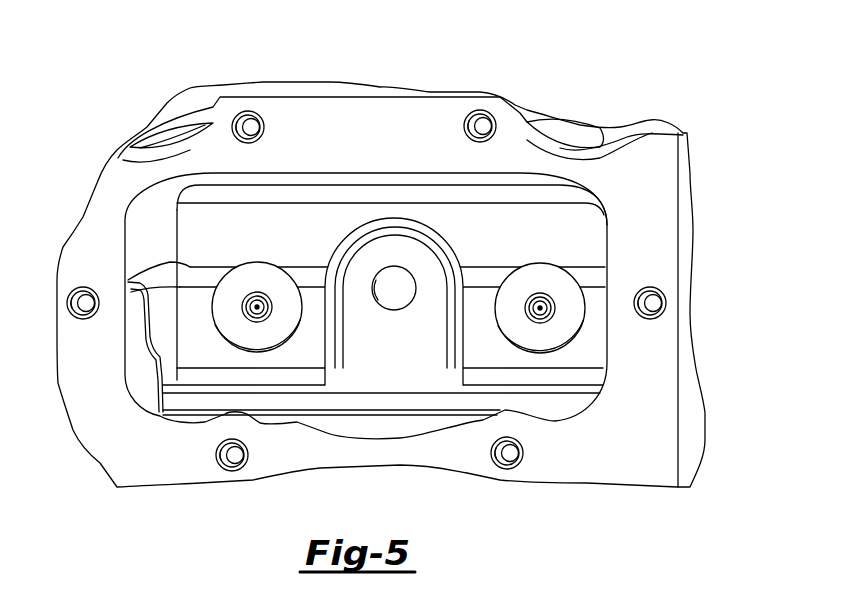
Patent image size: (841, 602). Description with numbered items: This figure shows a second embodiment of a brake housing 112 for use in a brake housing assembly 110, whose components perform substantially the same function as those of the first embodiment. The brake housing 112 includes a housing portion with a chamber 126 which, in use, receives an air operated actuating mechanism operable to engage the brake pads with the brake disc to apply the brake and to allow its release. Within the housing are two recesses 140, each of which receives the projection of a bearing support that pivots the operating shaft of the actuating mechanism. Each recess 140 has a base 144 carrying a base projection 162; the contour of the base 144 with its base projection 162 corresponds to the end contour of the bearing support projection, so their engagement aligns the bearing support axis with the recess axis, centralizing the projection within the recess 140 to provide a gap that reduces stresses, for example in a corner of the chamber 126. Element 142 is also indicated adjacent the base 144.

The brake housing assembly 110 is at (570, 105).
The brake housing 112 is at (660, 105).
The chamber 126 is at (384, 172).
The recess 140 is at (262, 277).
The rib 142 is at (508, 340).
The base 144 is at (508, 313).
The base projection 162 is at (255, 307).